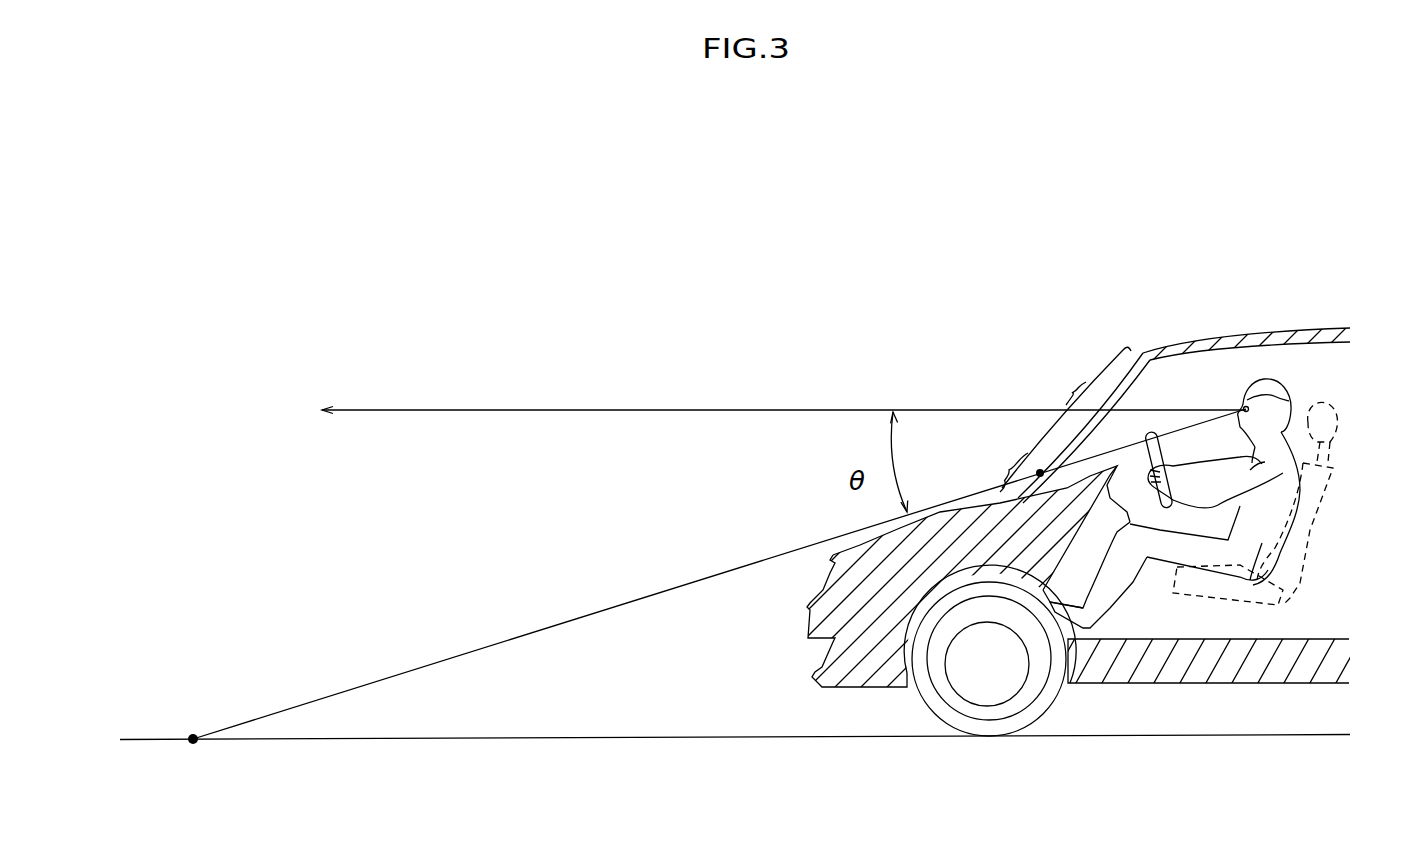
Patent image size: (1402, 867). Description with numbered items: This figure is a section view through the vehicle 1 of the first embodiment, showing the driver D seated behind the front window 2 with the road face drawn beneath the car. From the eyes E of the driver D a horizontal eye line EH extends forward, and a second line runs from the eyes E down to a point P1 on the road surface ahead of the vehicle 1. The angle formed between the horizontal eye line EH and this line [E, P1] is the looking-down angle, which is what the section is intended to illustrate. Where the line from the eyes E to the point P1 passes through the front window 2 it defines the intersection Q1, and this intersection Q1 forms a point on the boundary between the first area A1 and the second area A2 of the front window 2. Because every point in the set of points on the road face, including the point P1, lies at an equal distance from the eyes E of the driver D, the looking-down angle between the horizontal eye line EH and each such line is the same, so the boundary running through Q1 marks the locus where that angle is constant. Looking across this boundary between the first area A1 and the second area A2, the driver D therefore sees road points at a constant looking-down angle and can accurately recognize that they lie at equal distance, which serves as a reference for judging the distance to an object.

The vehicle 1 is at (870, 666).
The front window 2 is at (1128, 380).
The eyes E is at (1251, 406).
The driver D is at (1243, 553).
The point P1 is at (195, 754).
The intersection Q1 is at (1048, 470).
The first area A1 is at (1061, 390).
The second area A2 is at (1001, 470).
The horizontal eye line EH is at (563, 410).